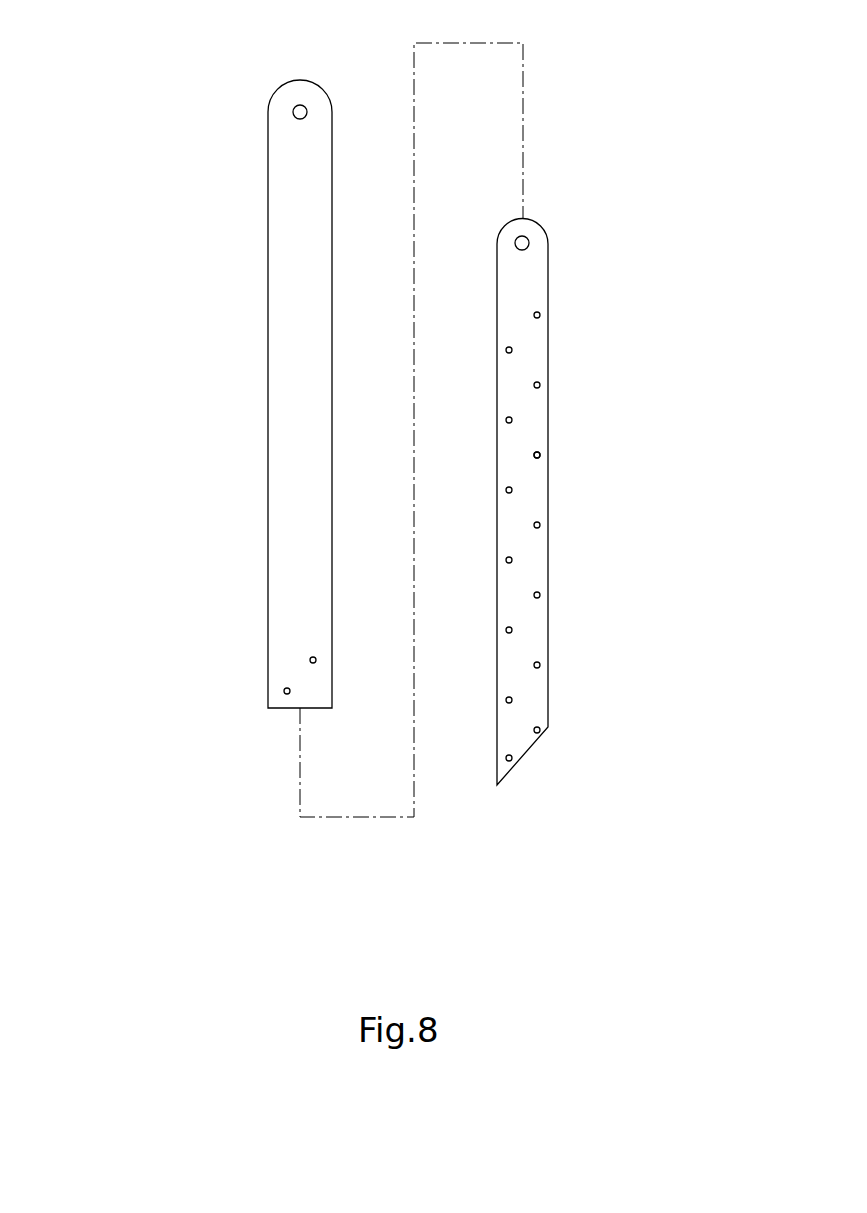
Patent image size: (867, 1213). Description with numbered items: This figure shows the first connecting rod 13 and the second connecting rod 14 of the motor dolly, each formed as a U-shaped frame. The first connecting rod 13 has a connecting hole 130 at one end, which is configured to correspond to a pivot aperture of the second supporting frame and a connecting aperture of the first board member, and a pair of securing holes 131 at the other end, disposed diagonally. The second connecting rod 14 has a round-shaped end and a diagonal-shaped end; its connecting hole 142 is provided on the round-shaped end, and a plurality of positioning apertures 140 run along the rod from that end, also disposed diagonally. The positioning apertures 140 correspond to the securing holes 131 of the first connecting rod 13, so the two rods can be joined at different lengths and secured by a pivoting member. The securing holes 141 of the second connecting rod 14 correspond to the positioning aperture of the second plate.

The first connecting rod 13 is at (259, 248).
The connecting hole 130 is at (297, 106).
The securing holes 131 is at (283, 691).
The second connecting rod 14 is at (565, 538).
The positioning apertures 140 is at (541, 455).
The securing holes 141 is at (541, 730).
The connecting hole 142 is at (530, 238).